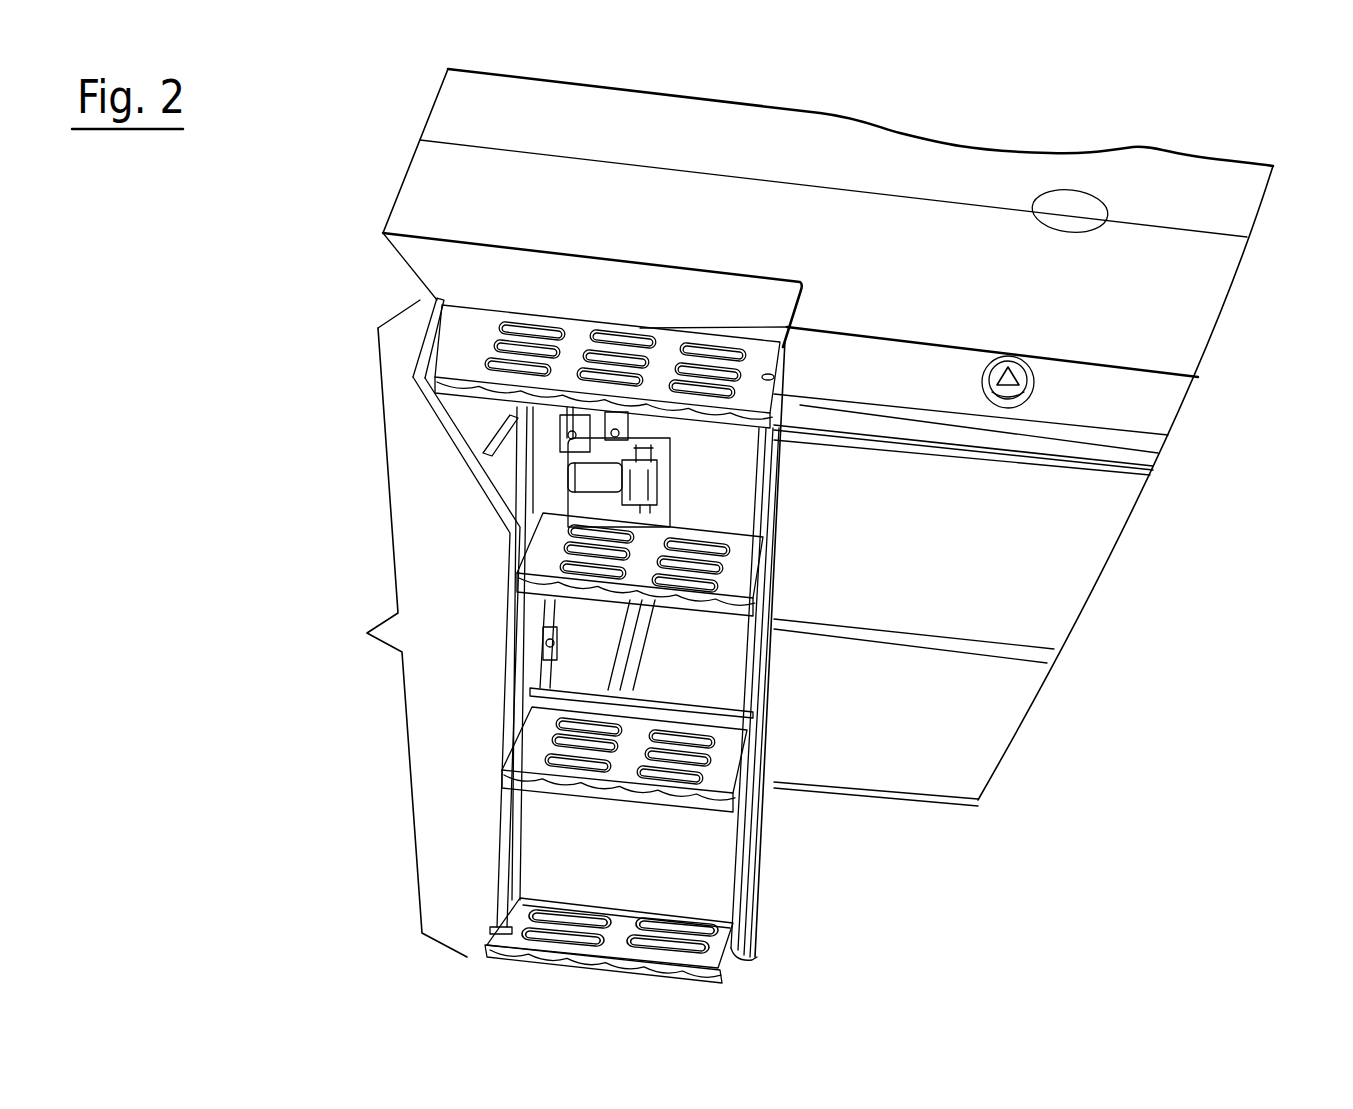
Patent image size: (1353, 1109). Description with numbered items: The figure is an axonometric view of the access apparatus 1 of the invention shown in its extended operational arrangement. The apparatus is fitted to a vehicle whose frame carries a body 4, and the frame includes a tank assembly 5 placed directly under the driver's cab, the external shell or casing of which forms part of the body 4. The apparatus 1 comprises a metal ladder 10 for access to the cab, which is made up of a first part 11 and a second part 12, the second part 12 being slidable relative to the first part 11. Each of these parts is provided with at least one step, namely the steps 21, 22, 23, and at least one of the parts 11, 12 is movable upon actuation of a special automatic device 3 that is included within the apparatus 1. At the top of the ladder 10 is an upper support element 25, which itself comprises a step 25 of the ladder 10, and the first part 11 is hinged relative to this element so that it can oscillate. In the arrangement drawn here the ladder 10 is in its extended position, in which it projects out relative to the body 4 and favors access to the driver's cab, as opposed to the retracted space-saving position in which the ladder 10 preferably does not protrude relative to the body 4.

The access apparatus 1 is at (354, 270).
The automatic device 3 is at (807, 530).
The body 4 is at (1220, 191).
The tank assembly 5 is at (1261, 394).
The ladder 10 is at (433, 627).
The first part 11 is at (709, 471).
The second part 12 is at (786, 884).
The step 21 is at (757, 555).
The step 22 is at (730, 753).
The step 23 is at (713, 948).
The upper support element 25 is at (663, 347).